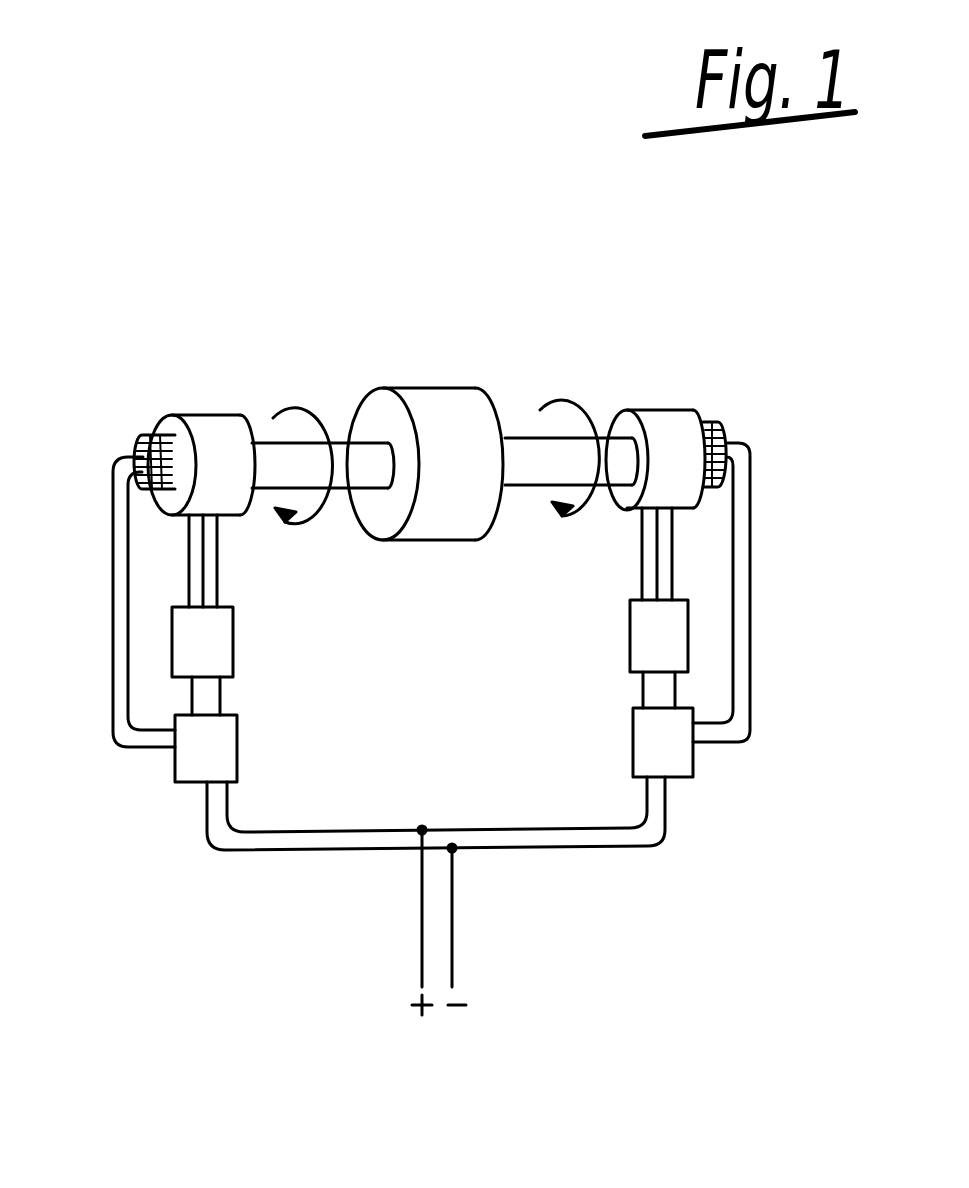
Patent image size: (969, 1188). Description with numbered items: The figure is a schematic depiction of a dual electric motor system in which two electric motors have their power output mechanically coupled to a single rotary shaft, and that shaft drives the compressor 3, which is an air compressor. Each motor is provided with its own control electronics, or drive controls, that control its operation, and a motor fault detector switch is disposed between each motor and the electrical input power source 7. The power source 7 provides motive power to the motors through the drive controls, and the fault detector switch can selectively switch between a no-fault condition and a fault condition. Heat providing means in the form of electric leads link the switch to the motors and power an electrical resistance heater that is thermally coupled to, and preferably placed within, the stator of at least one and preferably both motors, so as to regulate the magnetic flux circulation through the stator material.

The compressor 3 is at (435, 388).
The electrical input power source 7 is at (457, 966).